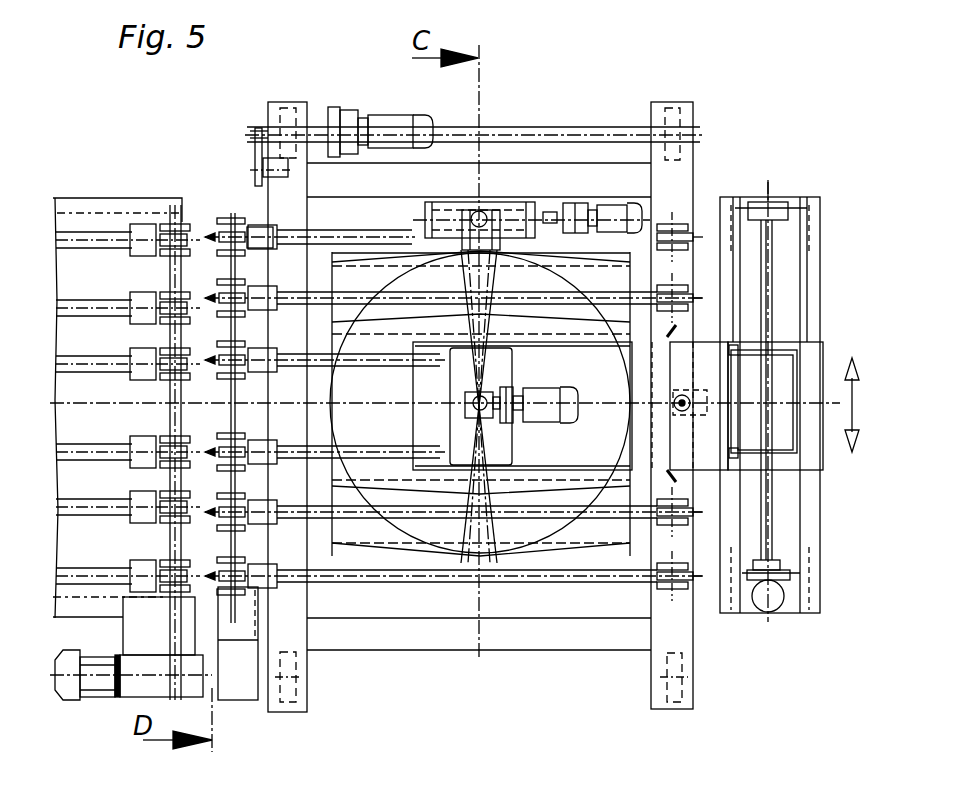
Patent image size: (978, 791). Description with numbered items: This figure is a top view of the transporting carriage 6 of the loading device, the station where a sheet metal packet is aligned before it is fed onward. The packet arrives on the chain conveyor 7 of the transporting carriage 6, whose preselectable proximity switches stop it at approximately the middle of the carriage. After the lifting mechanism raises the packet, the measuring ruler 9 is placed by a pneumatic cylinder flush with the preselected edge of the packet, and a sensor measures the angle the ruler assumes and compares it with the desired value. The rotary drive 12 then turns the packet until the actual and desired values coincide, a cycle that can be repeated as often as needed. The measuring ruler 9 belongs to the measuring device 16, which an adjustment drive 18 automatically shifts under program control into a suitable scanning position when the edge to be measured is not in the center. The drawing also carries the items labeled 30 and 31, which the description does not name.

The transporting carriage 6 is at (550, 679).
The chain conveyor 7 is at (305, 238).
The measuring ruler 9 is at (676, 362).
The rotary drive 12 is at (518, 220).
The measuring device 16 is at (712, 376).
The adjustment drive 18 is at (772, 593).
The pivot pin 30 is at (688, 408).
The direction of movement arrow 31 is at (855, 394).